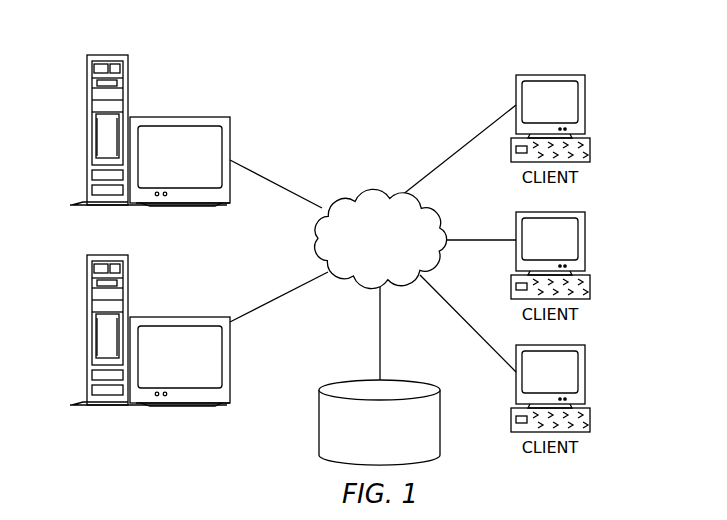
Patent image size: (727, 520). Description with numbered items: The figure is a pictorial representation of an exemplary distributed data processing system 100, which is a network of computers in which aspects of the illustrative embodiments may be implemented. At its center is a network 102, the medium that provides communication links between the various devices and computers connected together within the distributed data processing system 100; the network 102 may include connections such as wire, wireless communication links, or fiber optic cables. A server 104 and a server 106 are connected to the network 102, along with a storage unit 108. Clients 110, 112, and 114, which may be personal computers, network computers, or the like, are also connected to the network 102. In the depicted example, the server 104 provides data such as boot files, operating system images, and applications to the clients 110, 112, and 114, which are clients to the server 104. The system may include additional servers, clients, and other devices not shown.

The distributed data processing system 100 is at (428, 68).
The network 102 is at (355, 194).
The server 104 is at (86, 132).
The server 106 is at (86, 333).
The storage unit 108 is at (319, 421).
The client 110 is at (585, 104).
The client 112 is at (585, 241).
The client 114 is at (585, 375).